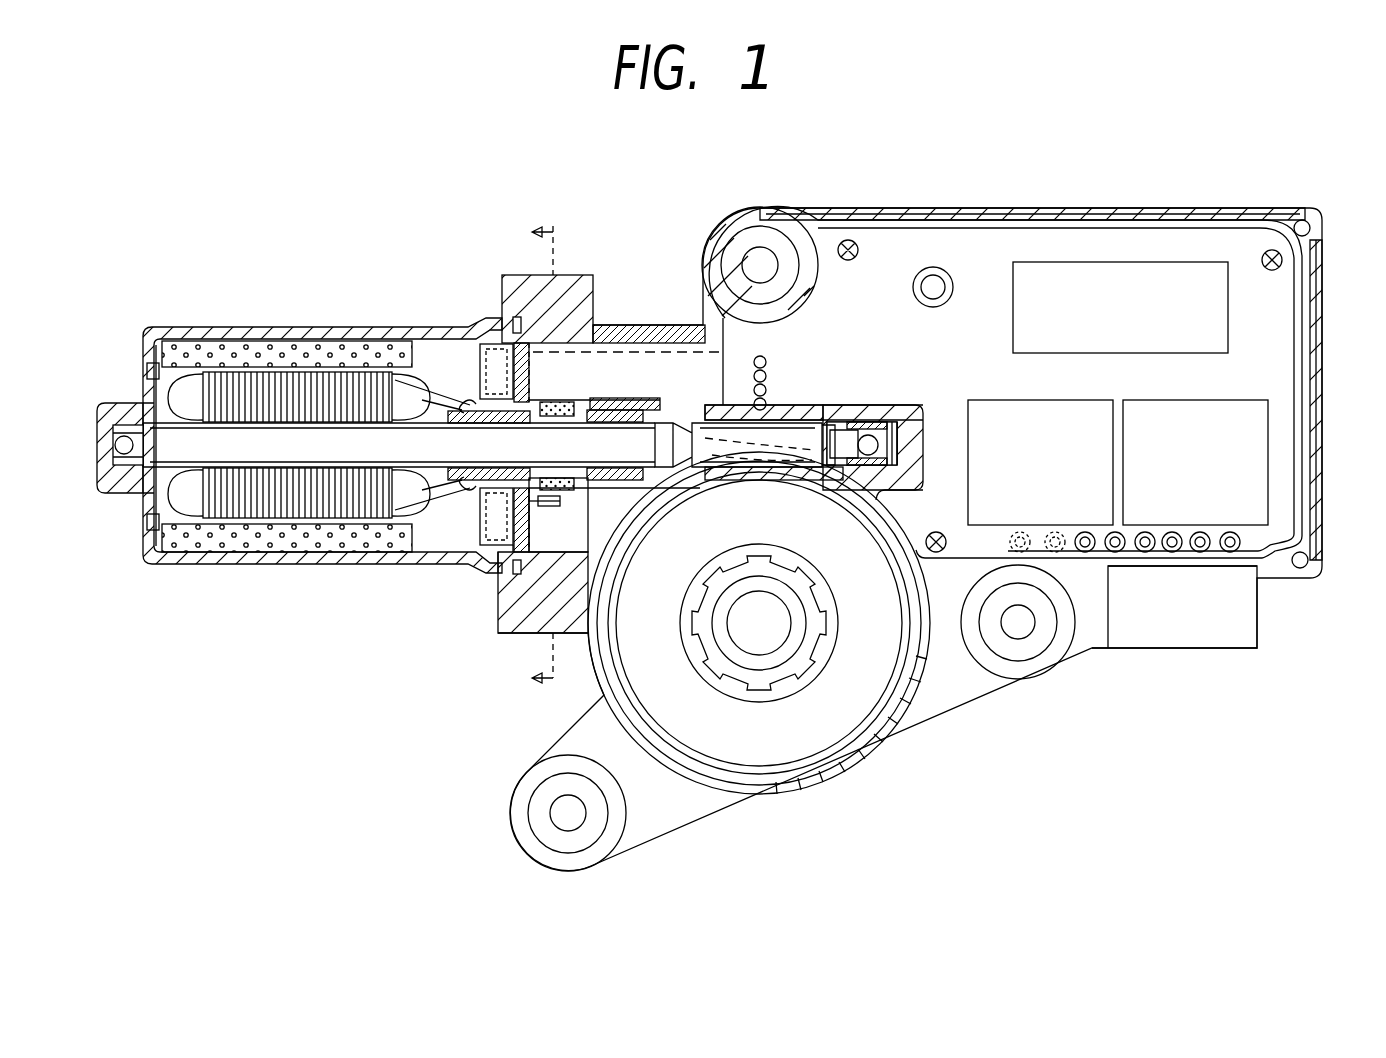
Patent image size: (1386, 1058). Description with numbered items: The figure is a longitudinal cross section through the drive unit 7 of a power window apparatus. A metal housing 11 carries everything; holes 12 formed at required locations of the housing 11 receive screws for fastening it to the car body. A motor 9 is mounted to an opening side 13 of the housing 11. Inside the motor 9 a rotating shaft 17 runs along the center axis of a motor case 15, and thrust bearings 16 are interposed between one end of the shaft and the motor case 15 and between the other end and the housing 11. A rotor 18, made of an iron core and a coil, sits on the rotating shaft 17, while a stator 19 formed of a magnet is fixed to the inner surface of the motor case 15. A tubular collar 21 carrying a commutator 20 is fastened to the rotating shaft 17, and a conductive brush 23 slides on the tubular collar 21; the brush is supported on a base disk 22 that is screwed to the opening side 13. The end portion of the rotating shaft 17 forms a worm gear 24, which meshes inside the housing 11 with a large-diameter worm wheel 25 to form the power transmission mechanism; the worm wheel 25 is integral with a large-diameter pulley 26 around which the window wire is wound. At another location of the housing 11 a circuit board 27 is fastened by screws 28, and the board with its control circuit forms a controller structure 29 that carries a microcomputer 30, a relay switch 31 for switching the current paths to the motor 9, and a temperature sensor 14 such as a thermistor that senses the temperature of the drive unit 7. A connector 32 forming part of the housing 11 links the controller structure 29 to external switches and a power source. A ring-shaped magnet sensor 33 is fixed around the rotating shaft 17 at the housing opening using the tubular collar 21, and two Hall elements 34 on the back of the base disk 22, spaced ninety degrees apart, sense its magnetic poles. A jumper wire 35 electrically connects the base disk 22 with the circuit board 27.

The drive unit 7 is at (728, 163).
The motor 9 is at (238, 309).
The housing 11 is at (777, 206).
The holes 12 is at (752, 262).
The opening side 13 is at (500, 300).
The temperature sensor 14 is at (933, 280).
The motor case 15 is at (158, 565).
The thrust bearings 16 is at (133, 485).
The rotating shaft 17 is at (288, 455).
The rotor 18 is at (340, 520).
The stator 19 is at (200, 552).
The commutator 20 is at (470, 496).
The tubular collar 21 is at (478, 406).
The base disk 22 is at (498, 568).
The conductive brush 23 is at (496, 362).
The worm gear 24 is at (670, 512).
The worm wheel 25 is at (890, 690).
The pulley 26 is at (790, 780).
The circuit board 27 is at (1200, 240).
The screws 28 is at (1320, 268).
The controller structure 29 is at (1015, 208).
The microcomputer 30 is at (1126, 278).
The relay switch 31 is at (1140, 408).
The connector 32 is at (1185, 632).
The magnet sensor 33 is at (560, 400).
The Hall elements 34 is at (500, 622).
The jumper wire 35 is at (760, 356).